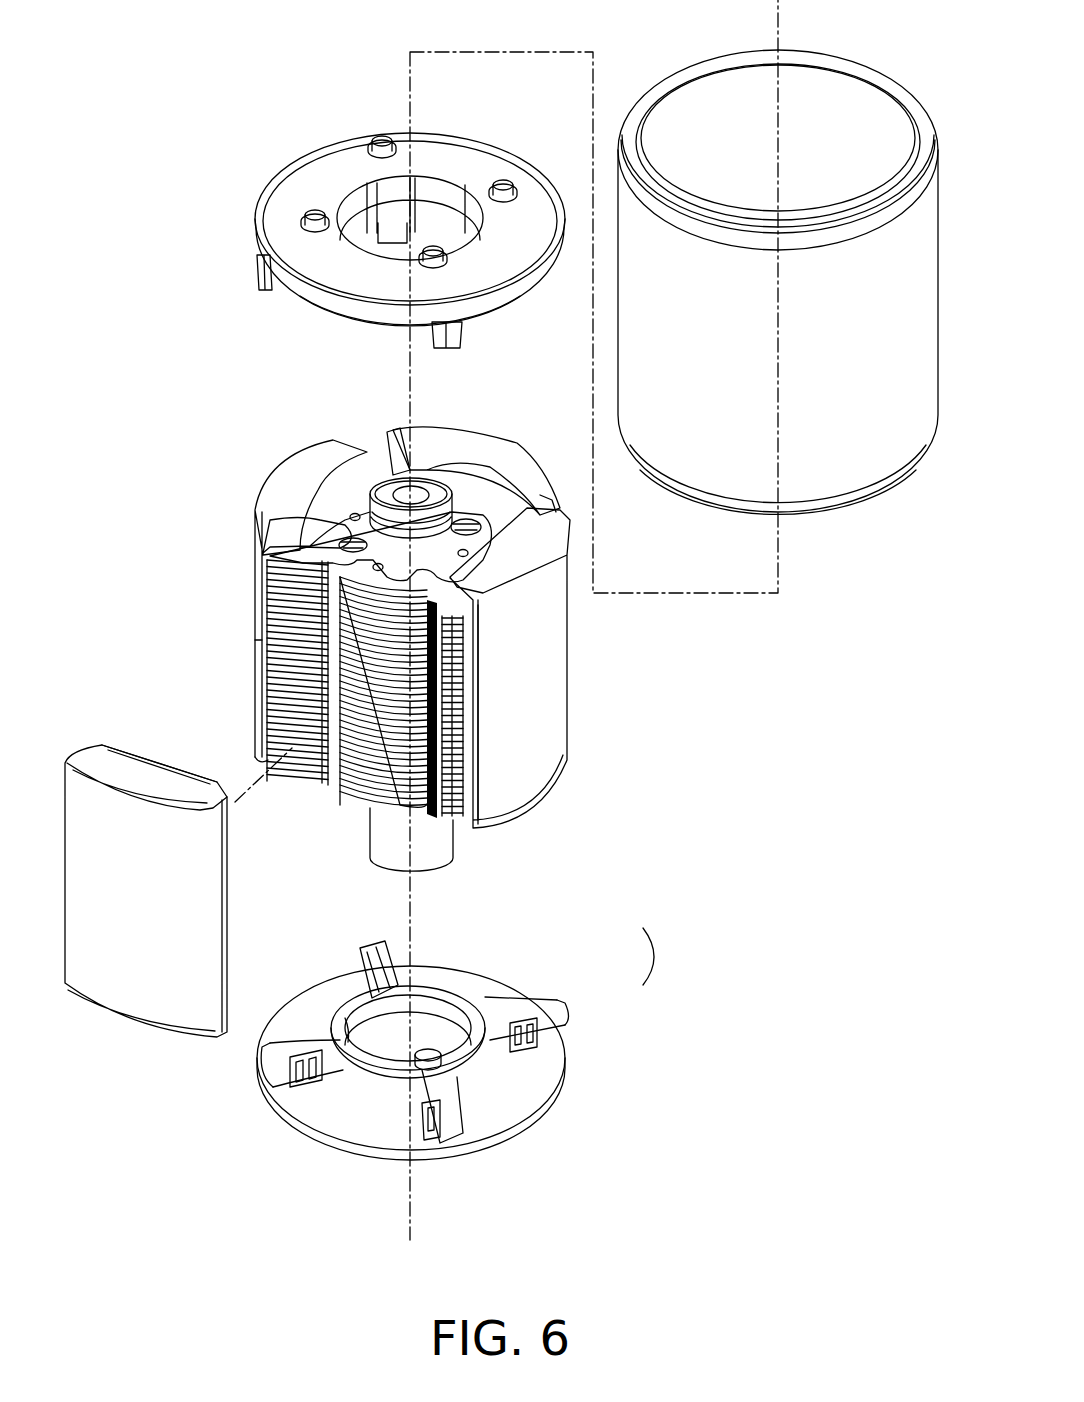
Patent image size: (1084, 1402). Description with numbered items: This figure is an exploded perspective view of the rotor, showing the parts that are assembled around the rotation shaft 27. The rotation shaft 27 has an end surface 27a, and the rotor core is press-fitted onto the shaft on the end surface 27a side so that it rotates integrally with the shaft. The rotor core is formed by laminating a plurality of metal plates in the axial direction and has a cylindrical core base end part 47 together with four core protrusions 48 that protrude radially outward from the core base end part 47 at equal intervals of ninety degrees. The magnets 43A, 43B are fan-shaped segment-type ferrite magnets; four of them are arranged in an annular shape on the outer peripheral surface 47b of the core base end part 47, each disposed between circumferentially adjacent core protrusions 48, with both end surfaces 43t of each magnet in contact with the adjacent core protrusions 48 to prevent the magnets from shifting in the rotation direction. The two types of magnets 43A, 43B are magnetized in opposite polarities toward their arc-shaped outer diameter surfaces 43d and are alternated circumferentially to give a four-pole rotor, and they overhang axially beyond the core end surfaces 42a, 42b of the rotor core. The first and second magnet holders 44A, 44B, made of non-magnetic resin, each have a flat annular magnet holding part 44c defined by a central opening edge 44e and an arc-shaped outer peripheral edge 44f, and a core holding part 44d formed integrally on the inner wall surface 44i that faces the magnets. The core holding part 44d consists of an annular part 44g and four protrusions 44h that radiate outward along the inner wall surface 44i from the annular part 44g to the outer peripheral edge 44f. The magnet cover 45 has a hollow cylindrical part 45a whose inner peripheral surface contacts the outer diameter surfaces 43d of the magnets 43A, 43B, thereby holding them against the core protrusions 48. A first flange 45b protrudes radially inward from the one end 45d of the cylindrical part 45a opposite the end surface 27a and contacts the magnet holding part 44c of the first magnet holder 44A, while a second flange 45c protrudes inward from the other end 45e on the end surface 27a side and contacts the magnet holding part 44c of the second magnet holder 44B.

The rotation shaft 27 is at (390, 543).
The end surface 27a is at (393, 483).
The core end surface 42a is at (397, 787).
The core end surface 42b is at (343, 523).
The magnet 43A is at (277, 482).
The magnet 43B is at (148, 752).
The outer diameter surface 43d is at (560, 641).
The end surface 43t is at (68, 757).
The first magnet holder 44A is at (562, 1124).
The second magnet holder 44B is at (346, 140).
The magnet holding part 44c is at (480, 165).
The core holding part 44d is at (250, 287).
The opening edge 44e is at (440, 207).
The outer peripheral edge 44f is at (527, 290).
The annular part 44g is at (447, 985).
The protrusion 44h is at (265, 292).
The inner wall surface 44i is at (525, 1087).
The magnet cover 45 is at (640, 486).
The cylindrical part 45a is at (727, 437).
The first flange 45b is at (800, 515).
The second flange 45c is at (888, 77).
The one end 45d is at (872, 480).
The other end 45e is at (632, 112).
The core base end part 47 is at (386, 758).
The outer peripheral surface 47b is at (366, 681).
The core protrusion 48 is at (305, 457).